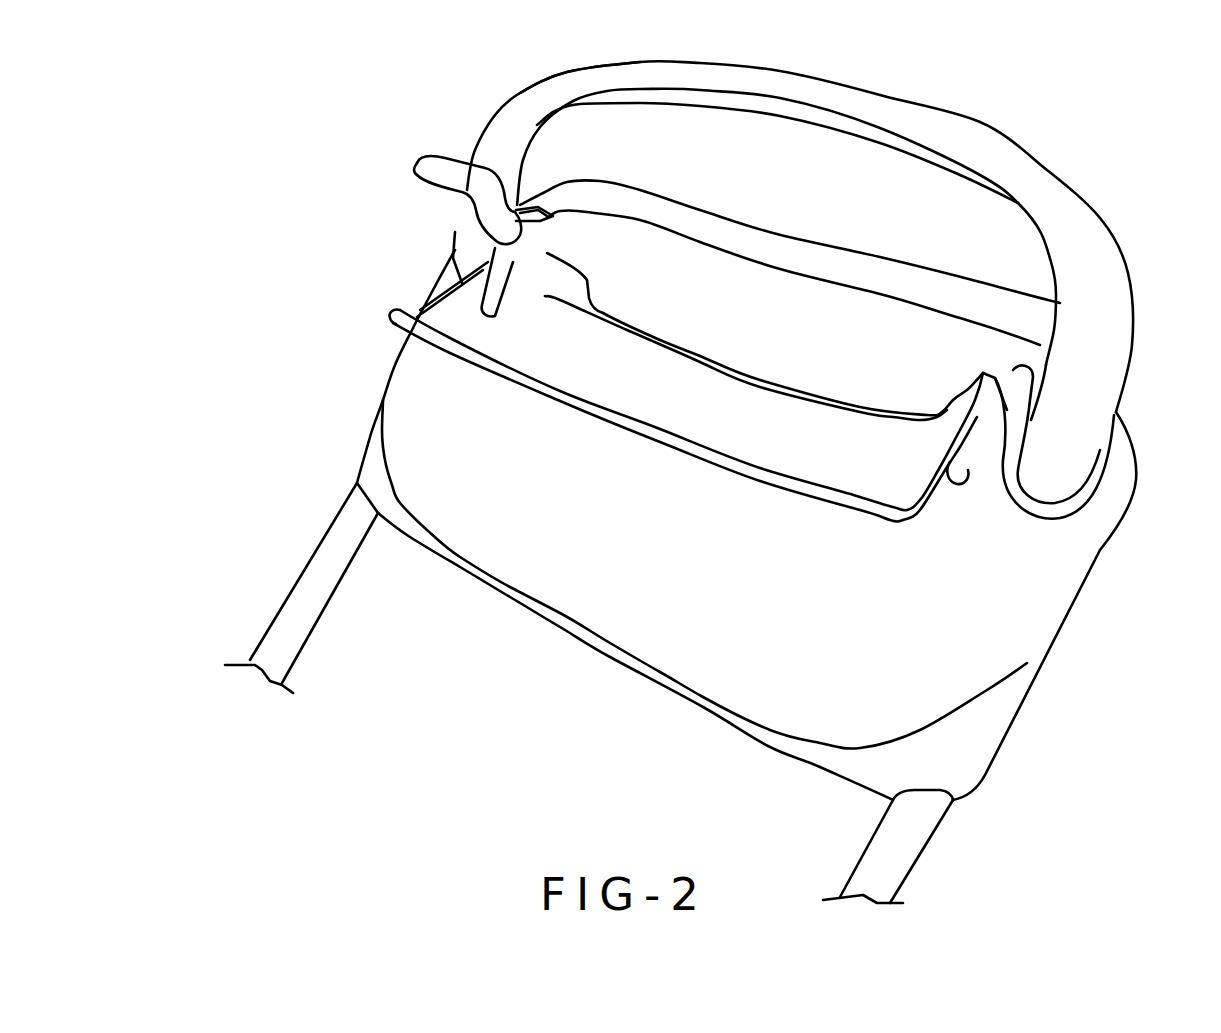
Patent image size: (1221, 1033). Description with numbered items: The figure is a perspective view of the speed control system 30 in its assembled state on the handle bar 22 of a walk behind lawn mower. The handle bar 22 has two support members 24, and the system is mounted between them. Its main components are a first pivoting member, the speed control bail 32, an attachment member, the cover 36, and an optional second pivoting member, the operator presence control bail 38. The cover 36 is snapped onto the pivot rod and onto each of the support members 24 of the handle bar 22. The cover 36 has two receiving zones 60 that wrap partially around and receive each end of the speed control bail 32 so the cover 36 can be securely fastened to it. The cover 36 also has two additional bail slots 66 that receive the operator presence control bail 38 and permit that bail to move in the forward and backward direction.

The handle bar 22 is at (993, 283).
The support members 24 is at (285, 622).
The speed control system 30 is at (430, 222).
The speed control bail 32 is at (517, 115).
The cover 36 is at (407, 432).
The operator presence control bail 38 is at (393, 315).
The receiving zones 60 is at (1010, 467).
The bail slots 66 is at (960, 482).